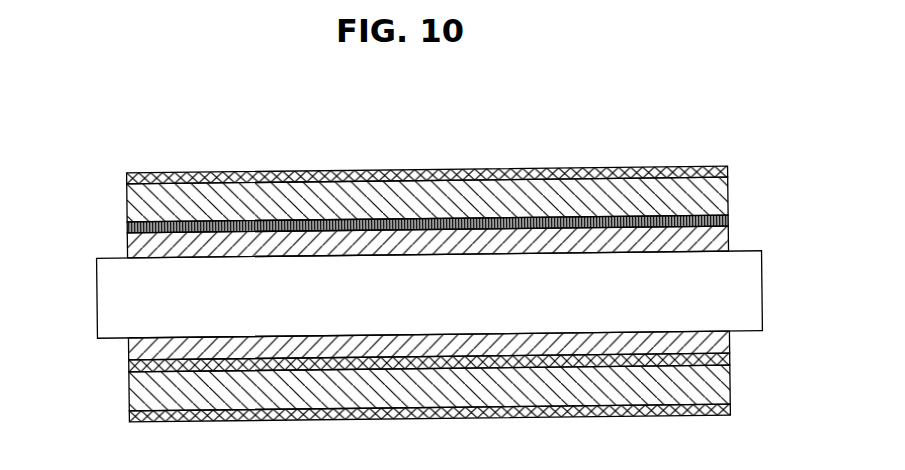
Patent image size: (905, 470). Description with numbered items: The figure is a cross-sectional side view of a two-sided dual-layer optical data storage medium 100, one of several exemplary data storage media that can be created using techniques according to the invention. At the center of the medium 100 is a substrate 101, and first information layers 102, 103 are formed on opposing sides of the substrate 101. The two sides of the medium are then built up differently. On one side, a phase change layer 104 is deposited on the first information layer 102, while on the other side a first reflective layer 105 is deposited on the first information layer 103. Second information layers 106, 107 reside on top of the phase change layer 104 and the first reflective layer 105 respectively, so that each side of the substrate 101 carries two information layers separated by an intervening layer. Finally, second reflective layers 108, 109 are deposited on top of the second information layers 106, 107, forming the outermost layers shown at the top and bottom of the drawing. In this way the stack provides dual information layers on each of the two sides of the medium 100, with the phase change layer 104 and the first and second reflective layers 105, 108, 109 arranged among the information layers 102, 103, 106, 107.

The two-sided dual-layer optical data storage medium 100 is at (529, 155).
The substrate 101 is at (762, 291).
The first information layer 102 is at (729, 243).
The first information layer 103 is at (729, 342).
The phase change layer 104 is at (128, 224).
The first reflective layer 105 is at (128, 363).
The second information layer 106 is at (729, 197).
The second information layer 107 is at (729, 382).
The second reflective layer 108 is at (128, 174).
The second reflective layer 109 is at (128, 413).